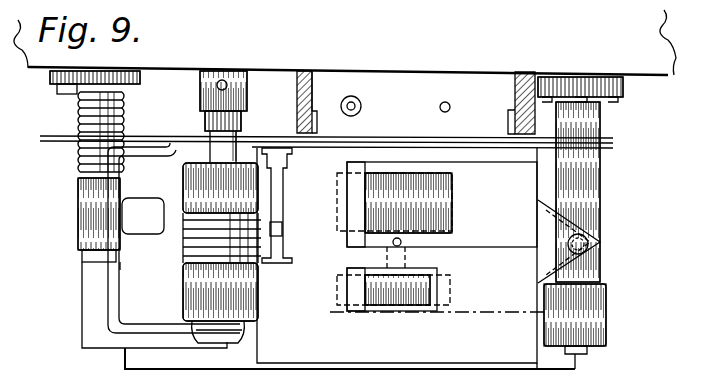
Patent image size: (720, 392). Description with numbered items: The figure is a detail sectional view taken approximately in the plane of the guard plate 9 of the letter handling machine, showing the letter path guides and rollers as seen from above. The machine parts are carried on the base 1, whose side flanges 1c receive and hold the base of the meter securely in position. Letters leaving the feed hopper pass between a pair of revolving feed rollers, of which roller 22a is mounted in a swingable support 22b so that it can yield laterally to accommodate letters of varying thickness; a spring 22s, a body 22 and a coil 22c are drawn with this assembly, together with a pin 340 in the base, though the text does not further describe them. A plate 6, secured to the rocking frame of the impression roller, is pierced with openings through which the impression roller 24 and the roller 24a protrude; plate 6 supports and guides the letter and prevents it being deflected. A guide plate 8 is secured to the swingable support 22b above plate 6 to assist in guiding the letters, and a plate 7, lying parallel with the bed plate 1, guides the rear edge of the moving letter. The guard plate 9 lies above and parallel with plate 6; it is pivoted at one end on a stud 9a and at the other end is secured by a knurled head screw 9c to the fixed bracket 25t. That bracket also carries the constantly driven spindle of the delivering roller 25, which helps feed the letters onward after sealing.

The base 1 is at (345, 60).
The side flanges 1c is at (300, 78).
The pivot pin 340 is at (355, 100).
The plate 7 is at (52, 140).
The spring 22s is at (72, 126).
The guide plate 8 is at (82, 318).
The swingable support 22b is at (158, 246).
The plunger 22 is at (250, 185).
The coil spring 22c is at (262, 220).
The feed roller 22a is at (196, 300).
The stud 9a is at (286, 168).
The guard plate 9 is at (408, 366).
The plate 6 is at (240, 366).
The impression roller 24 is at (452, 200).
The roller 24a is at (435, 295).
The bracket 25t is at (583, 178).
The knurled head screw 9c is at (590, 245).
The delivering roller 25 is at (606, 318).